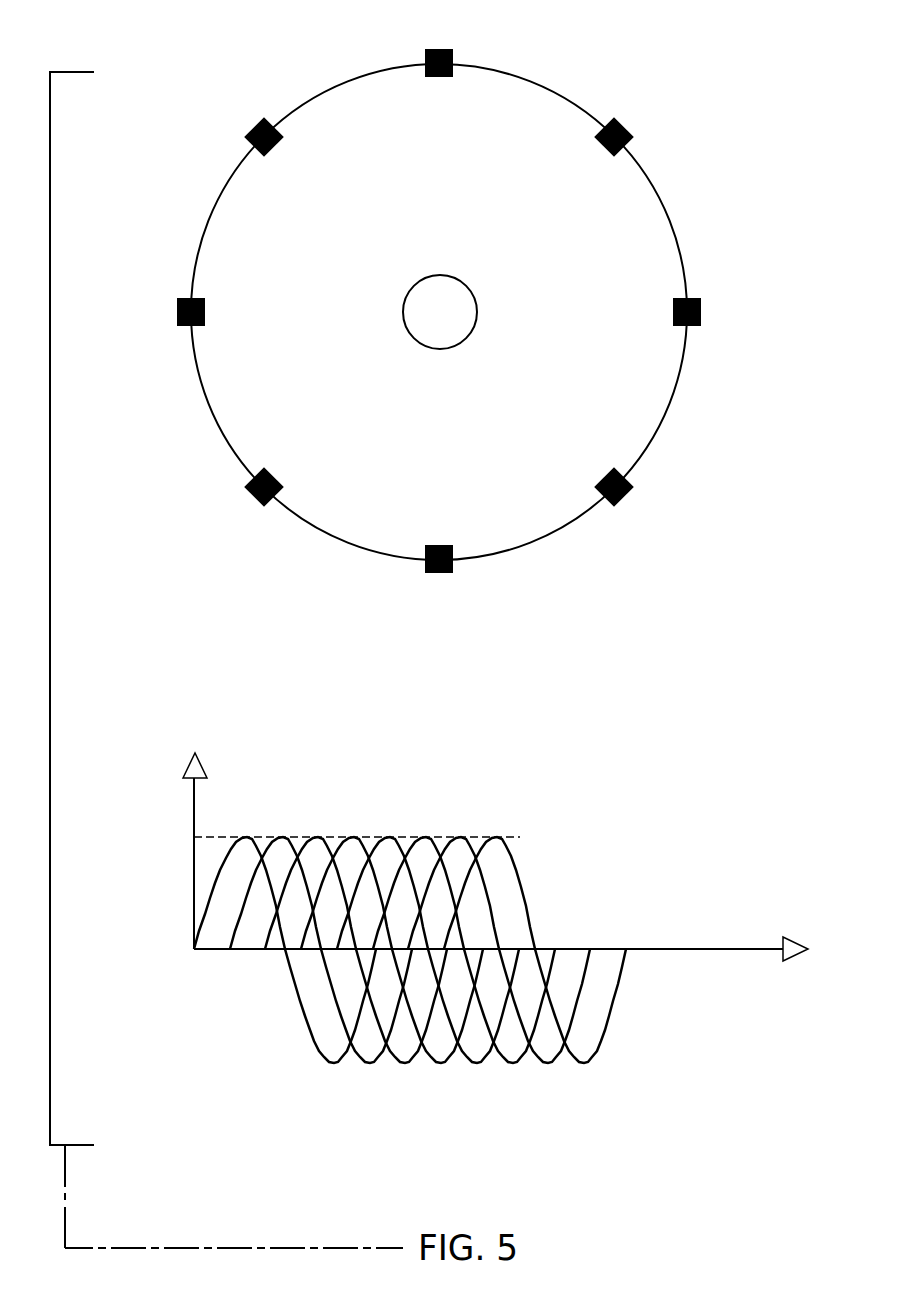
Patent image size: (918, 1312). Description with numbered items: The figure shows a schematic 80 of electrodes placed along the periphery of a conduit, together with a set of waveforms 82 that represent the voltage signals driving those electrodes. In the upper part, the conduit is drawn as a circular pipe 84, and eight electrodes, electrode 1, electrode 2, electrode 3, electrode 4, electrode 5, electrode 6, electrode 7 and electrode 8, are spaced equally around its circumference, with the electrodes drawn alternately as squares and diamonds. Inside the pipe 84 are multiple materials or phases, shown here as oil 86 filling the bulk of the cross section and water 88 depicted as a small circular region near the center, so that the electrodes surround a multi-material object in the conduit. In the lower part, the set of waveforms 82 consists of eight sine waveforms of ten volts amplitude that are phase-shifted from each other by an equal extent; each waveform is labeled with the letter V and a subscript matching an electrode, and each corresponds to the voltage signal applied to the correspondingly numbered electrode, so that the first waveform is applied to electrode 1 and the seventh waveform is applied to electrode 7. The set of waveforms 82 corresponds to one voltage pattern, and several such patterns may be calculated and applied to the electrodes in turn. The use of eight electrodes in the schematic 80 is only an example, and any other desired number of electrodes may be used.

The schematic 80 is at (695, 62).
The set of waveforms 82 is at (657, 732).
The pipe 84 is at (337, 83).
The oil 86 is at (637, 235).
The water 88 is at (427, 322).
The electrode 1 is at (439, 49).
The electrode 2 is at (619, 131).
The electrode 3 is at (696, 312).
The electrode 4 is at (618, 496).
The electrode 5 is at (439, 574).
The electrode 6 is at (261, 494).
The electrode 7 is at (179, 312).
The electrode 8 is at (260, 128).